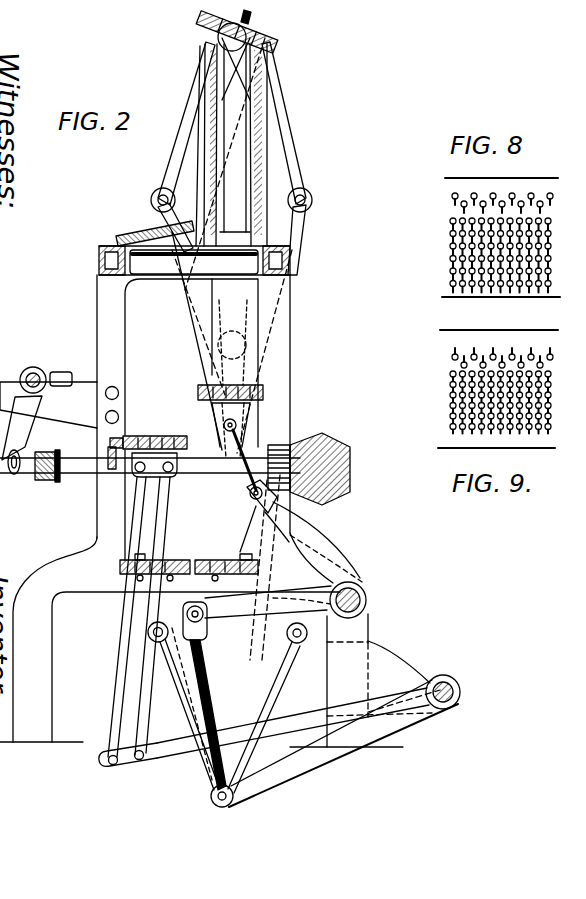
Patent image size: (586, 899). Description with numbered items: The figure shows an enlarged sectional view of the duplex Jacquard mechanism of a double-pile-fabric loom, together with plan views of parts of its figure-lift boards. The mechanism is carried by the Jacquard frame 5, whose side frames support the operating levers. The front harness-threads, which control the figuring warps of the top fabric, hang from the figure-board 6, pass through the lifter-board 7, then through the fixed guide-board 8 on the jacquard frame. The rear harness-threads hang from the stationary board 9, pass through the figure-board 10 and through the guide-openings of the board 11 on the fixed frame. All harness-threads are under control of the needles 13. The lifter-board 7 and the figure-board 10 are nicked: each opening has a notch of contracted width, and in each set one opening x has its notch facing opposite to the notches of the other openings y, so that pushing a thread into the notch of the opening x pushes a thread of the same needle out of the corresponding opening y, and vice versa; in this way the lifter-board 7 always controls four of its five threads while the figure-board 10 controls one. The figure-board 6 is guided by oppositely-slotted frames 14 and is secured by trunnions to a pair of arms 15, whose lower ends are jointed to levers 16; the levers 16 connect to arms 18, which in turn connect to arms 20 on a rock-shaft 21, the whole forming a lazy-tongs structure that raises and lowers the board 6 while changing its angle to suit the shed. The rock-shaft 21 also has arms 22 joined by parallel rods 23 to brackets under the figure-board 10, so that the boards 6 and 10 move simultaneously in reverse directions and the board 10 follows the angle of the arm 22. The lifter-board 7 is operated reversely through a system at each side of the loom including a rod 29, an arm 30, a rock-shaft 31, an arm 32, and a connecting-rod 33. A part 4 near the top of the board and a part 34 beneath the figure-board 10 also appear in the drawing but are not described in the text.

In FIG. 2, the clamp tab 4 is at (243, 17).
In FIG. 2, the Jacquard frame 5 is at (220, 496).
In FIG. 2, the figure-board 6 is at (270, 40).
In FIG. 2, the lifter-board 7 is at (262, 392).
In FIG. 9, the lifter-board 7 is at (432, 332).
In FIG. 2, the fixed guide-board 8 is at (257, 556).
In FIG. 2, the stationary board 9 is at (155, 230).
In FIG. 2, the figure-board 10 is at (155, 434).
In FIG. 8, the figure-board 10 is at (440, 296).
In FIG. 2, the guide-board 11 is at (180, 567).
In FIG. 2, the needles 13 is at (298, 448).
In FIG. 2, the oppositely-slotted frames 14 is at (232, 349).
In FIG. 2, the arms 15 is at (297, 141).
In FIG. 2, the levers 16 is at (296, 236).
In FIG. 2, the arms 18 is at (227, 714).
In FIG. 2, the arms 20 is at (325, 765).
In FIG. 2, the rock-shaft 21 is at (460, 694).
In FIG. 2, the arms 22 is at (293, 723).
In FIG. 2, the parallel rods 23 is at (135, 617).
In FIG. 2, the rod 29 is at (158, 776).
In FIG. 2, the arm 30 is at (257, 613).
In FIG. 2, the rock-shaft 31 is at (366, 603).
In FIG. 2, the arm 32 is at (326, 538).
In FIG. 2, the connecting-rod 33 is at (250, 440).
In FIG. 2, the block 34 is at (150, 424).
In FIG. 8, the opening x is at (452, 186).
In FIG. 9, the opening x is at (444, 344).
In FIG. 8, the openings y is at (452, 222).
In FIG. 9, the openings y is at (444, 372).